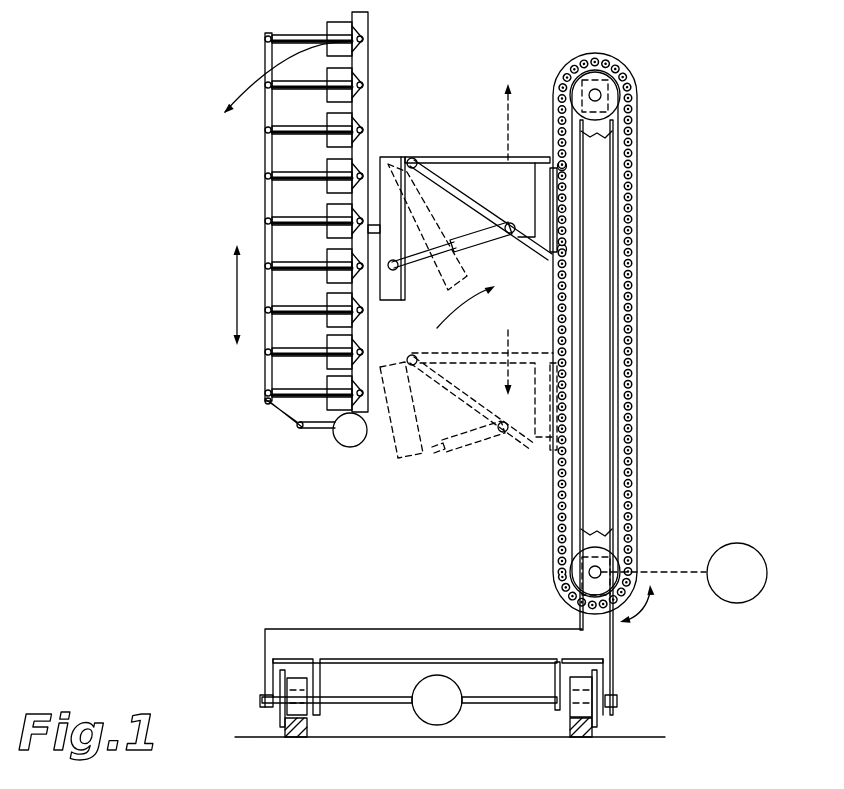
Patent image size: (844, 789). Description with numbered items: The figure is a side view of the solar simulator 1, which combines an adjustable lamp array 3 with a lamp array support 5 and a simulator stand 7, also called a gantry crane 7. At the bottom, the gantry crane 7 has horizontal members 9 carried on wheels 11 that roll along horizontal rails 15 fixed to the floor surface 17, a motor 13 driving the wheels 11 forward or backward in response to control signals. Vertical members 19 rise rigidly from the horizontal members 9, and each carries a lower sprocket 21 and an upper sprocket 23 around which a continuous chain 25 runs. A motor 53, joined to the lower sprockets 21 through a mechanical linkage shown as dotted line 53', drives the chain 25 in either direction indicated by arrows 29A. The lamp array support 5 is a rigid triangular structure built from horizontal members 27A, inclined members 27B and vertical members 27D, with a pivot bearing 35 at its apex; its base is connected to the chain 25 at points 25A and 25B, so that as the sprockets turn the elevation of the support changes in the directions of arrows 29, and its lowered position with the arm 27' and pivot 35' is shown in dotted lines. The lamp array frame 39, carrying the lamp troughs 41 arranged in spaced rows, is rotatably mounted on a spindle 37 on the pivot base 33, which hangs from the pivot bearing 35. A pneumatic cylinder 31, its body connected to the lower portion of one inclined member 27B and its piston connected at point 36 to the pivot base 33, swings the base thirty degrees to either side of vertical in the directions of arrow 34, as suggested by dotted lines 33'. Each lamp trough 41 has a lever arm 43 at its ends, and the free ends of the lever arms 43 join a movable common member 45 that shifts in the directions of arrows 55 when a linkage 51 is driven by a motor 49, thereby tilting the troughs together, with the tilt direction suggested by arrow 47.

The solar simulator 1 is at (190, 505).
The adjustable lamp array 3 is at (272, 430).
The lamp array support 5 is at (441, 130).
The simulator stand 7 is at (530, 591).
The horizontal members 9 is at (330, 630).
The wheels 11 is at (310, 693).
The motor 13 is at (462, 688).
The horizontal rails 15 is at (308, 730).
The floor surface 17 is at (630, 737).
The vertical members 19 is at (612, 458).
The lower sprocket 21 is at (615, 548).
The upper sprocket 23 is at (622, 102).
The continuous chain 25 is at (633, 372).
The point of chain 25A is at (562, 166).
The point of chain 25B is at (562, 249).
The horizontal members 27A is at (480, 157).
The inclined members 27B is at (478, 191).
The vertical members 27D is at (548, 205).
The arm in lower position 27' is at (483, 418).
The arrows 29 is at (510, 142).
The arrows 29A is at (645, 618).
The pneumatic cylinder 31 is at (492, 250).
The pivot base 33 is at (393, 349).
The dotted lines 33' is at (427, 242).
The arrow 34 is at (467, 315).
The pivot bearing 35 is at (405, 147).
The carriage in lower position 35' is at (401, 431).
The point 36 is at (395, 302).
The spindle 37 is at (402, 218).
The lamp array frame 39 is at (368, 22).
The lamp troughs 41 is at (345, 25).
The lever arm 43 is at (283, 39).
The movable common member 45 is at (268, 107).
The direction of discharge 47 is at (250, 70).
The motor 49 is at (350, 449).
The linkage 51 is at (300, 440).
The motor 53 is at (737, 556).
The mechanical linkage 53' is at (653, 558).
The arrows 55 is at (232, 300).